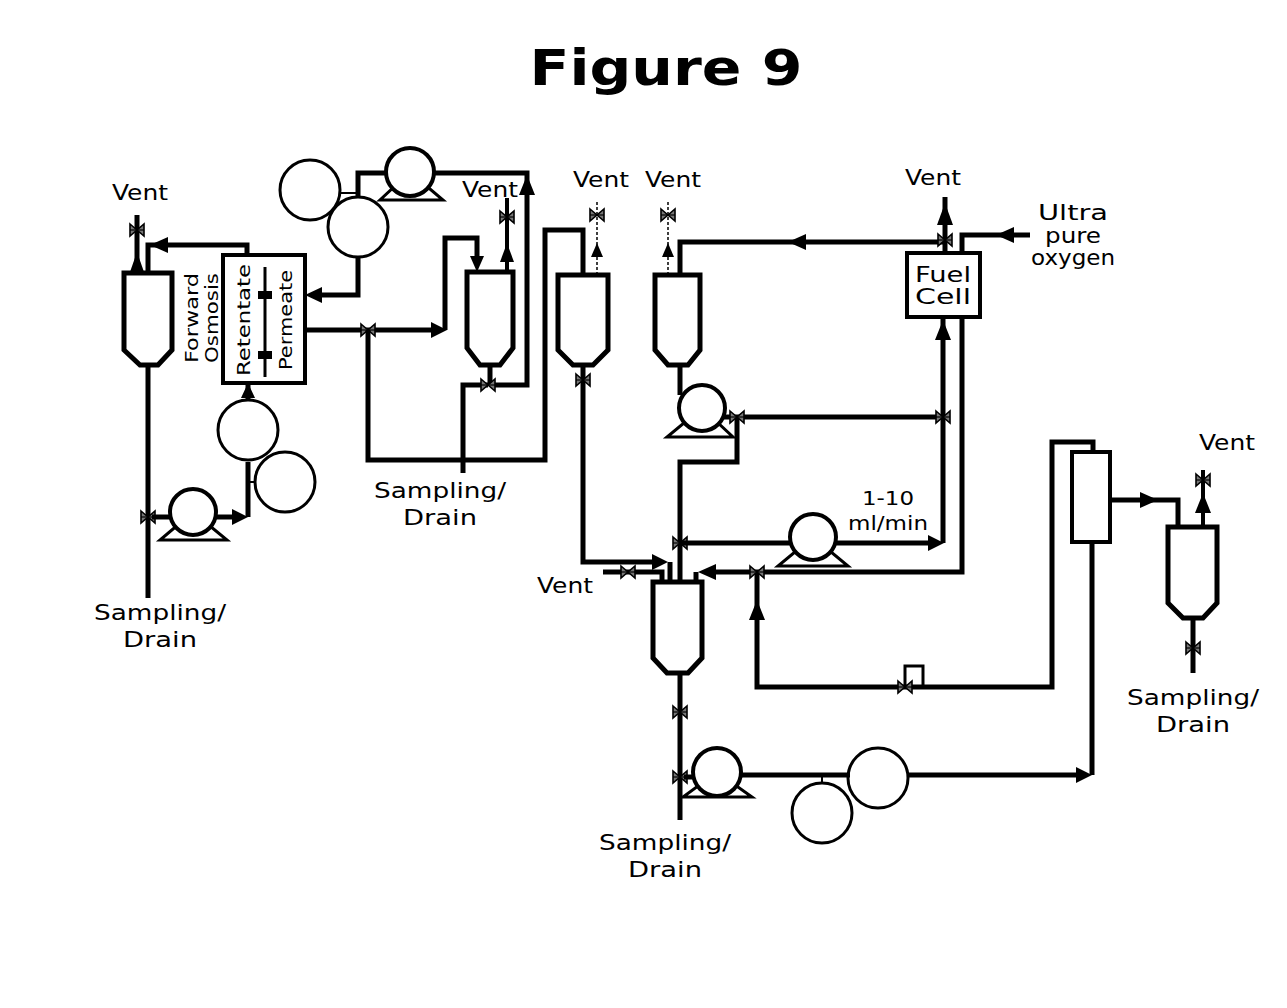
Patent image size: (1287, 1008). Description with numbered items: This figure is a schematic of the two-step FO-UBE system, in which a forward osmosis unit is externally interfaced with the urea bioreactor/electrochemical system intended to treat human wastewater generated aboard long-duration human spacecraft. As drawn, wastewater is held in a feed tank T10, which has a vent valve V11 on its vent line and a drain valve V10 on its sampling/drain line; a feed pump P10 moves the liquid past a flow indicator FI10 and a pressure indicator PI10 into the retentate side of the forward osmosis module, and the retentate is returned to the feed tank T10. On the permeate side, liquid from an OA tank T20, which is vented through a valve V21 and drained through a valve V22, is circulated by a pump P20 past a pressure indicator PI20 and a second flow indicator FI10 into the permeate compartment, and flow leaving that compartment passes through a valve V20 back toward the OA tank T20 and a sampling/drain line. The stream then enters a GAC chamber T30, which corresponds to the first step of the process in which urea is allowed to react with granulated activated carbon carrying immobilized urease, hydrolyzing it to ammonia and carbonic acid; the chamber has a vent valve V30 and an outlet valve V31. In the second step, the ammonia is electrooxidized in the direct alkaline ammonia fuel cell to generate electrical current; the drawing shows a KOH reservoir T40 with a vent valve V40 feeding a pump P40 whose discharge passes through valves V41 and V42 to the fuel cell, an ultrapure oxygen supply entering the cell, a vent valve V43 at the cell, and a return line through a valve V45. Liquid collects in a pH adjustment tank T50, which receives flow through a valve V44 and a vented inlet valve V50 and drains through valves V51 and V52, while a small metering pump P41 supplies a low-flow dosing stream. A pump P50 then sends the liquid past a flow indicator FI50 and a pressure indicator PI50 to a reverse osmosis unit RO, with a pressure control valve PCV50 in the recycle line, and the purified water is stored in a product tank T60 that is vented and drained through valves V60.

The feed tank T10 is at (154, 417).
The feed tank drain valve V10 is at (118, 517).
The feed tank vent valve V11 is at (108, 243).
The feed pump P10 is at (200, 527).
The flow indicator FI10 is at (303, 345).
The pressure indicator PI10 is at (281, 482).
The pressure indicator PI20 is at (319, 190).
The draw solution pump P20 is at (457, 266).
The valve V20 is at (394, 288).
The OA tank vent valve V21 is at (484, 235).
The OA tank outlet valve V22 is at (491, 426).
The oxalic acid tank T20 is at (490, 328).
The GAC chamber T30 is at (583, 320).
The GAC chamber vent valve V30 is at (621, 237).
The GAC chamber outlet valve V31 is at (623, 473).
The KOH reservoir T40 is at (800, 314).
The KOH reservoir vent valve V40 is at (695, 237).
The valve V41 is at (759, 402).
The valve V42 is at (916, 430).
The fuel cell vent valve V43 is at (919, 225).
The valve V44 is at (707, 529).
The valve V45 is at (894, 502).
The KOH pump P40 is at (805, 483).
The metering pump P41 is at (812, 543).
The pH adjustment tank T50 is at (607, 701).
The pH adjustment tank vent valve V50 is at (632, 587).
The valve V51 is at (707, 716).
The drain valve V52 is at (650, 778).
The pump P50 is at (766, 786).
The flow indicator FI50 is at (970, 675).
The pressure indicator PI50 is at (822, 809).
The pressure control valve PCV50 is at (903, 706).
The reverse osmosis unit RO is at (1125, 497).
The product tank T60 is at (1170, 600).
The product tank valve V60 is at (1225, 564).